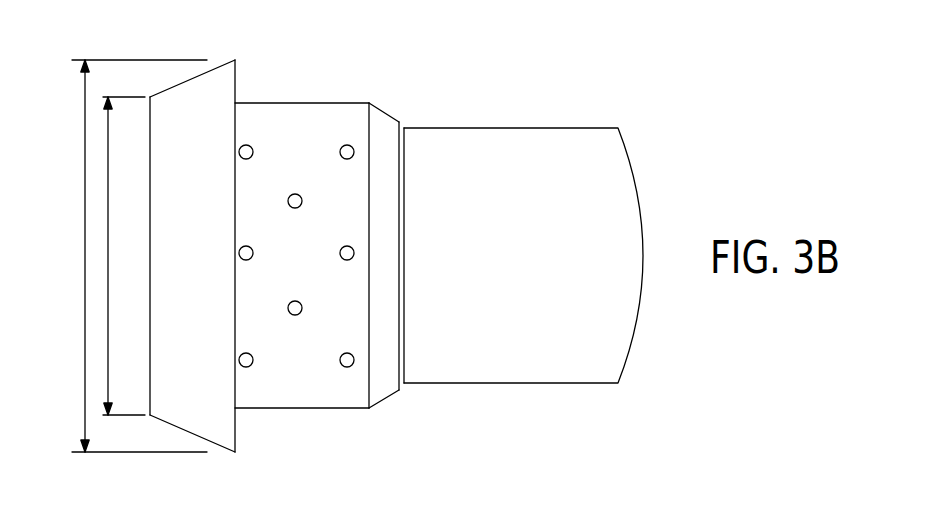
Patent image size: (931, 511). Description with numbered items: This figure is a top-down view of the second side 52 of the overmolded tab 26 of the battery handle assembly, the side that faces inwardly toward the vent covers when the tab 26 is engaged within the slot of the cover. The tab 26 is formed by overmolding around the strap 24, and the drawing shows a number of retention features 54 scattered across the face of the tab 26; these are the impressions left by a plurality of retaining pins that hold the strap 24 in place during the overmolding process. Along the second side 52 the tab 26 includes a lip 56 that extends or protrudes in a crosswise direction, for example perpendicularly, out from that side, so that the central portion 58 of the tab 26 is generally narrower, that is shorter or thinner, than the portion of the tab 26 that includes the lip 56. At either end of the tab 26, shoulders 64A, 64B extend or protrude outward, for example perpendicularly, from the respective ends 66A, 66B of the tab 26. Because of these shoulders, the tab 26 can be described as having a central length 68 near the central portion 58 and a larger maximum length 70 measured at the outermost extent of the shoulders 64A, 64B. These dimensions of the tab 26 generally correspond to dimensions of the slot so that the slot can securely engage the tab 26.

The strap 24 is at (490, 138).
The tab 26 is at (350, 52).
The second side 52 is at (292, 268).
The retention features 54 is at (353, 157).
The lip 56 is at (170, 257).
The central portion 58 is at (365, 449).
The shoulder 64A is at (219, 455).
The shoulder 64B is at (221, 59).
The end 66A is at (259, 416).
The end 66B is at (254, 95).
The central length 68 is at (108, 257).
The maximum length 70 is at (85, 256).